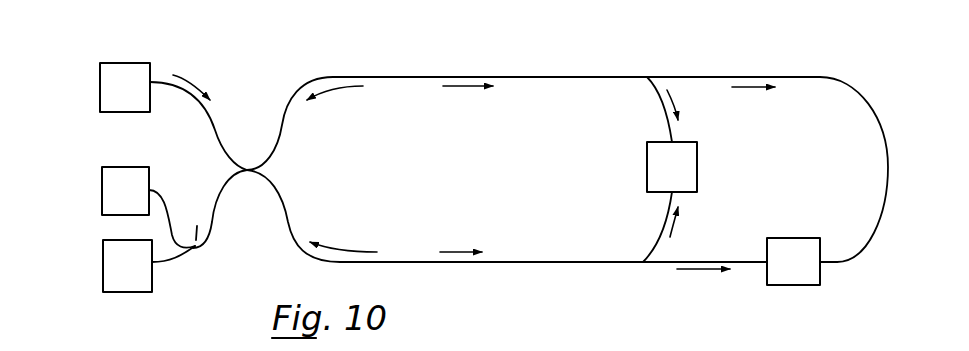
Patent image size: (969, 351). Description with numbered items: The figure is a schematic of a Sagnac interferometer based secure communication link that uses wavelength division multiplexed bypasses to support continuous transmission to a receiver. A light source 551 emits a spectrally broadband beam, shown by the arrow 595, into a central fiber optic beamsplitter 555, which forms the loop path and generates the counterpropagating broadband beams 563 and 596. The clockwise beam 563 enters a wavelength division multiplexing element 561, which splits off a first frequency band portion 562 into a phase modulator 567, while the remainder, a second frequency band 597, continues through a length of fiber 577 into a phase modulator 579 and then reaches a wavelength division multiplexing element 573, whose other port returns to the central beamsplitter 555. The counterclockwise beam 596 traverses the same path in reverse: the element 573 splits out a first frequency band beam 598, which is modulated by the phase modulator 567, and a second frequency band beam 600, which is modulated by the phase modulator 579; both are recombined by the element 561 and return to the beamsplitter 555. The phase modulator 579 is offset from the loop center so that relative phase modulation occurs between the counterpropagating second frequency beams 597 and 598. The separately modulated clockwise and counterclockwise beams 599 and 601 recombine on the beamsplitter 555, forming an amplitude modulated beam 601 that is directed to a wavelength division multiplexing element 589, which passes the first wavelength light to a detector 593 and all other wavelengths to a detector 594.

The light source 551 is at (100, 78).
The light from source (propagation arrow) 595 is at (190, 82).
The central fiber optic beamsplitter 555 is at (247, 168).
The wavelength division multiplexing element 589 is at (197, 247).
The detector 594 is at (101, 190).
The detector 593 is at (103, 265).
The amplitude modulated light beam 601 is at (337, 88).
The clockwise propagating light beam 563 is at (468, 88).
The modulated clockwise light beam 599 is at (347, 252).
The counterclockwise propagating light beam 596 is at (460, 252).
The wavelength division multiplexing element 561 is at (640, 82).
The wavelength division multiplexing element 573 is at (640, 260).
The phase modulator 567 is at (697, 173).
The split-off portion of clockwise beam 562 is at (677, 100).
The counterclockwise first frequency band light beam 598 is at (677, 223).
The second frequency band light beam 597 is at (750, 88).
The length of fiber 577 is at (877, 132).
The counterclockwise second frequency band light beam 600 is at (697, 272).
The phase modulator 579 is at (820, 240).